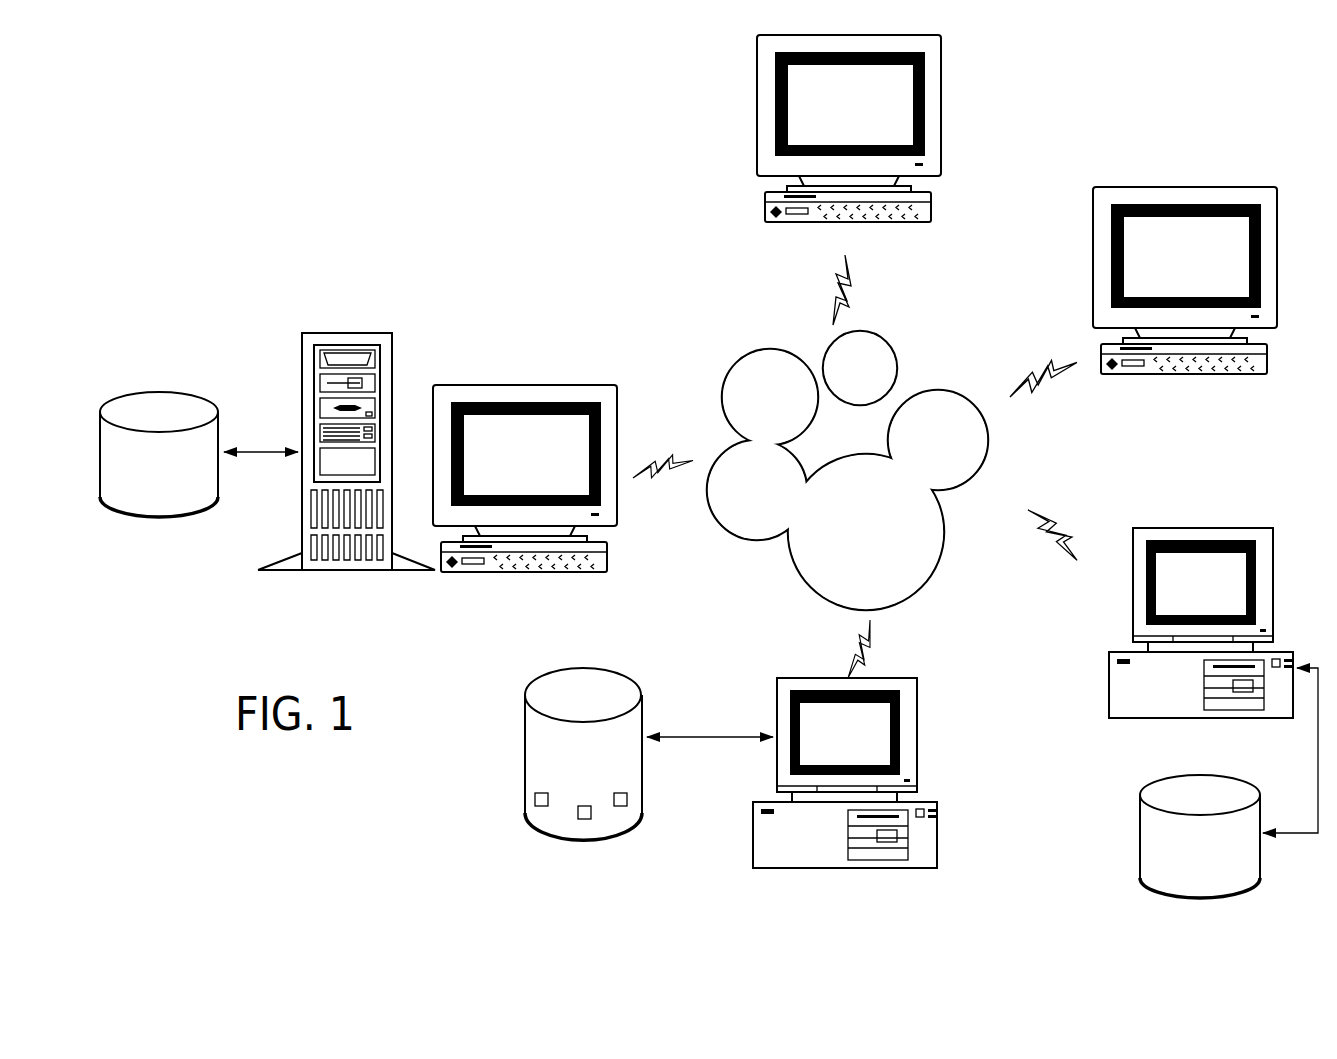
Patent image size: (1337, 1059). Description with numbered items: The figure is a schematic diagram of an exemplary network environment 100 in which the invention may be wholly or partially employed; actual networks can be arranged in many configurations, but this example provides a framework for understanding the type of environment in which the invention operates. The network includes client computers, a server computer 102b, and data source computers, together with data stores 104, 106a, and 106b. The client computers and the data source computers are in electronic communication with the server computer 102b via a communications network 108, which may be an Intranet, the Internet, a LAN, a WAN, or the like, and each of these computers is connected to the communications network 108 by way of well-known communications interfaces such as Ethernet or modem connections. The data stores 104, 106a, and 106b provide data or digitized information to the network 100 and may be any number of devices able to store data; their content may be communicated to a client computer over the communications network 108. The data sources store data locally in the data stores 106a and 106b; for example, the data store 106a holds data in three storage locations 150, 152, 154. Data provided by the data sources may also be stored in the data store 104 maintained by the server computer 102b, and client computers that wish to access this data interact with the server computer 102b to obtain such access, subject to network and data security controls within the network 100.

The network environment 100 is at (532, 250).
The server computer 102b is at (348, 333).
The data store 104 is at (160, 392).
The data store 106a is at (585, 668).
The data store 106b is at (1140, 840).
The communications network 108 is at (745, 355).
The storage location 150 is at (535, 800).
The storage location 152 is at (585, 820).
The storage location 154 is at (628, 800).